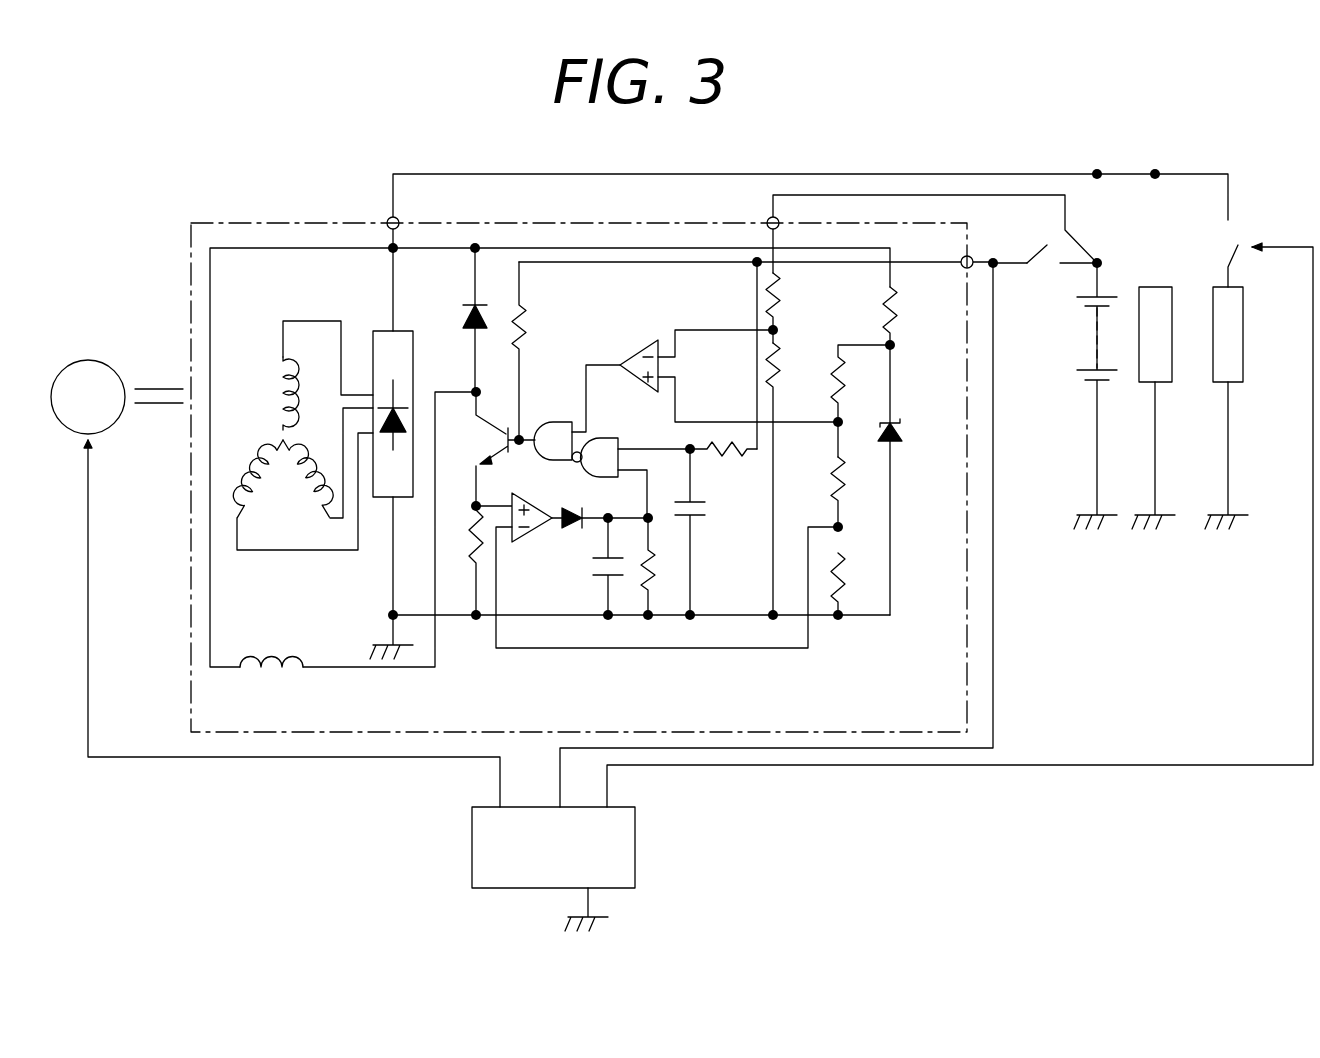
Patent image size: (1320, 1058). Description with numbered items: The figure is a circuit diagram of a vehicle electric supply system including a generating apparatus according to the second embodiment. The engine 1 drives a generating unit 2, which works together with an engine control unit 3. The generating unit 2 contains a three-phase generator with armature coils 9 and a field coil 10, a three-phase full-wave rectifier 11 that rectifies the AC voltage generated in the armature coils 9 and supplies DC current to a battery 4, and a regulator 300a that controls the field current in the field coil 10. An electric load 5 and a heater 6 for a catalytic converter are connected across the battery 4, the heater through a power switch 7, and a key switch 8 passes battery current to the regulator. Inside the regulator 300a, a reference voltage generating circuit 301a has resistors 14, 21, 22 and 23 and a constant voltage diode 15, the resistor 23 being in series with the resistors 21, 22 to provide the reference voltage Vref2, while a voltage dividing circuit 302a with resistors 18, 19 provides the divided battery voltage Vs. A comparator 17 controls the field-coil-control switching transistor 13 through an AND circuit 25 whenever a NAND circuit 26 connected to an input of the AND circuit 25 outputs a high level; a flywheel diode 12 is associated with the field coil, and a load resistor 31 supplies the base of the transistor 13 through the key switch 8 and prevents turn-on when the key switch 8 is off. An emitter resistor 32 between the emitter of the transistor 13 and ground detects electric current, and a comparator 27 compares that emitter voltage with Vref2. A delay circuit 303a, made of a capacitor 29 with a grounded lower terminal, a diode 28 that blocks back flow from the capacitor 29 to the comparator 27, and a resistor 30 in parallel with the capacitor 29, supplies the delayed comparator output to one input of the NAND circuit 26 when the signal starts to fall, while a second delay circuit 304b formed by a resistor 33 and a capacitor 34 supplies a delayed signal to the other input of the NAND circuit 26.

The engine 1 is at (88, 358).
The generating unit 2 is at (255, 223).
The engine control unit 3 is at (637, 862).
The battery 4 is at (1085, 378).
The electric load 5 is at (1160, 385).
The heater (EHC) for a catalytic converter 6 is at (1235, 385).
The power switch 7 is at (1237, 225).
The key switch 8 is at (1048, 268).
The armature coils 9 is at (280, 430).
The field coil 10 is at (263, 678).
The three-phase full-wave rectifier 11 is at (413, 390).
The flywheel diode 12 is at (463, 325).
The field-coil-control switching transistor 13 is at (488, 430).
The resistor 14 is at (895, 310).
The constant voltage diode 15 is at (900, 437).
The comparator 17 is at (643, 350).
The resistor 18 is at (780, 300).
The resistor 19 is at (782, 355).
The resistor 21 is at (843, 368).
The resistor 22 is at (845, 480).
The resistor 23 is at (845, 585).
The AND circuit 25 is at (560, 420).
The NAND circuit 26 is at (600, 440).
The comparator 27 is at (530, 535).
The diode 28 is at (568, 530).
The capacitor 29 is at (600, 578).
The resistor 30 is at (652, 578).
The load resistor 31 is at (525, 318).
The emitter resistor 32 is at (473, 542).
The resistor 33 is at (722, 458).
The capacitor 34 is at (700, 520).
The regulator 300a is at (828, 640).
The reference voltage generating circuit 301a is at (851, 534).
The voltage dividing circuit 302a is at (795, 360).
The delay circuit 303a is at (625, 622).
The delay circuit 304b is at (750, 578).